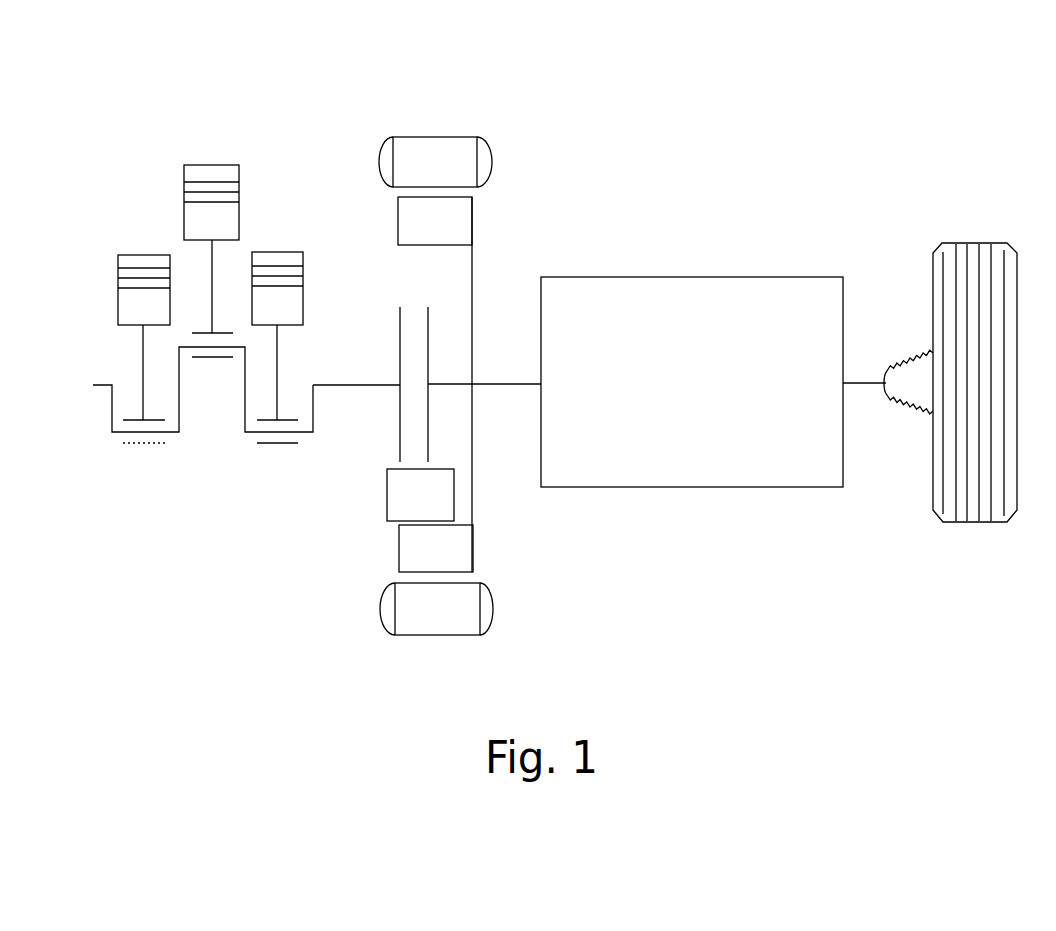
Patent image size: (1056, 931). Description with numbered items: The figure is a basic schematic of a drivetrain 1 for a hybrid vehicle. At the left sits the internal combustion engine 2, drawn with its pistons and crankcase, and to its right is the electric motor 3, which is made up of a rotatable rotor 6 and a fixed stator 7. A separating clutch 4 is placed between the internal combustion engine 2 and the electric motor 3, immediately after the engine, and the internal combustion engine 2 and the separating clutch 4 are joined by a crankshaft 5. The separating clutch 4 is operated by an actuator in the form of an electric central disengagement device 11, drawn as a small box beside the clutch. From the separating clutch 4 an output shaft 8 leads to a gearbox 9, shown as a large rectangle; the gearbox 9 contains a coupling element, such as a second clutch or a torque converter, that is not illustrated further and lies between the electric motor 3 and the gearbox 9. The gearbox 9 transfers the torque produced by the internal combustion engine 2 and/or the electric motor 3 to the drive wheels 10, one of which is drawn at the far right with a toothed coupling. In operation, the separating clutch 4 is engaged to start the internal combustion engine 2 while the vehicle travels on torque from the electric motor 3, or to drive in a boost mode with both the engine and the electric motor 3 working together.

The drivetrain 1 is at (97, 113).
The internal combustion engine 2 is at (213, 417).
The electric motor 3 is at (499, 407).
The separating clutch 4 is at (430, 414).
The crankshaft 5 is at (341, 384).
The rotor 6 is at (486, 548).
The stator 7 is at (470, 607).
The output shaft 8 is at (496, 383).
The gearbox 9 is at (700, 334).
The drive wheels 10 is at (972, 243).
The electric central disengagement device 11 is at (397, 497).